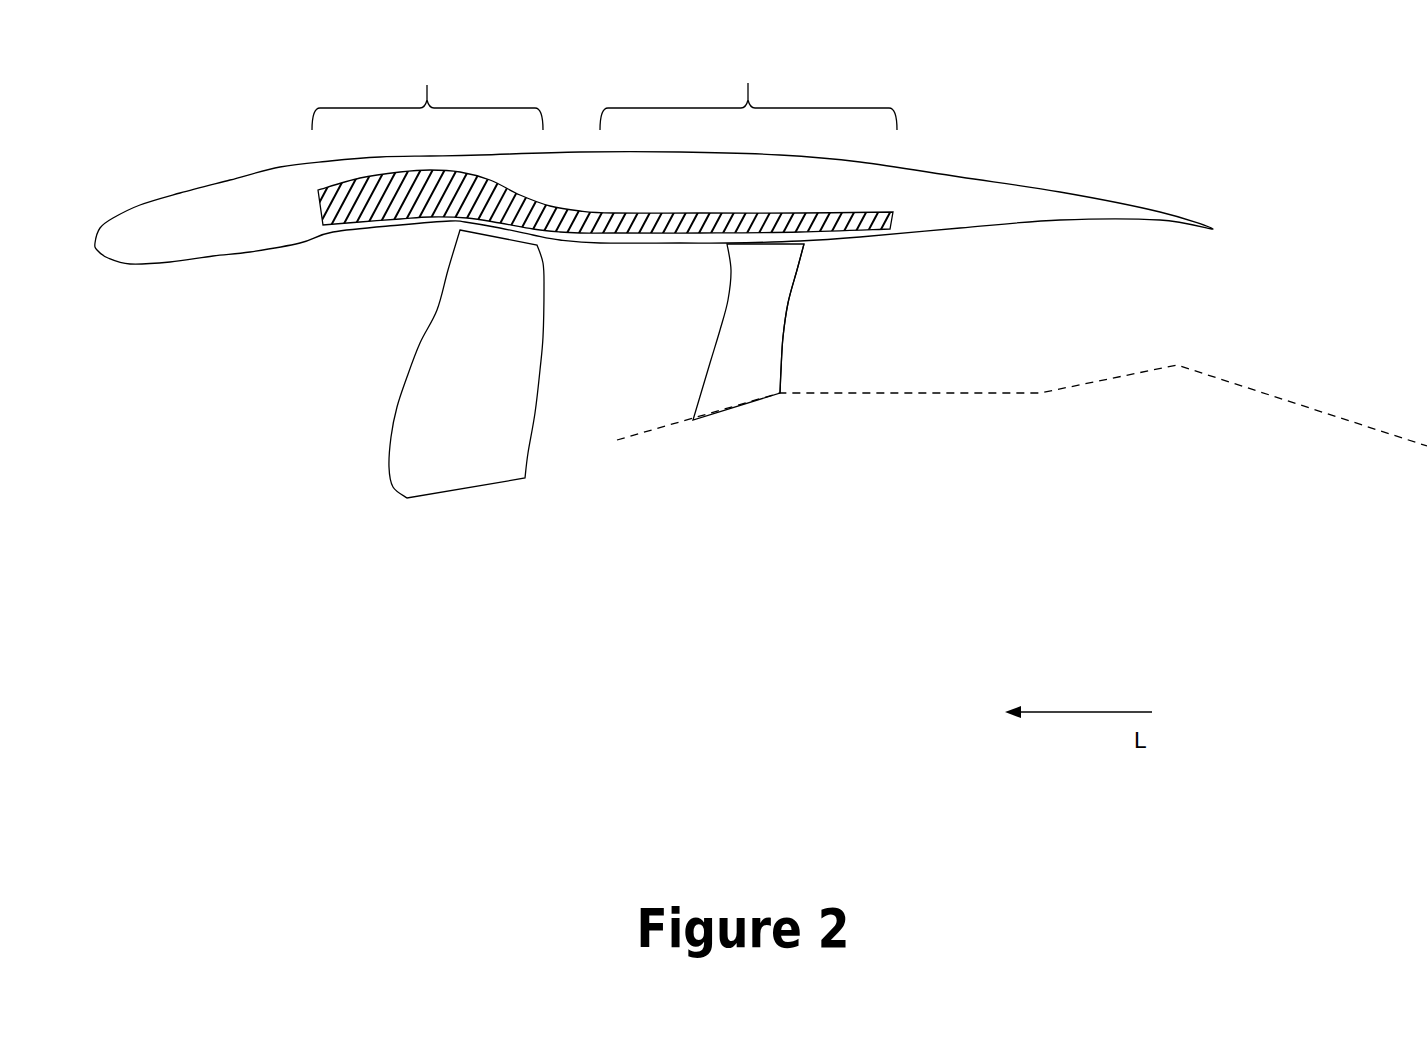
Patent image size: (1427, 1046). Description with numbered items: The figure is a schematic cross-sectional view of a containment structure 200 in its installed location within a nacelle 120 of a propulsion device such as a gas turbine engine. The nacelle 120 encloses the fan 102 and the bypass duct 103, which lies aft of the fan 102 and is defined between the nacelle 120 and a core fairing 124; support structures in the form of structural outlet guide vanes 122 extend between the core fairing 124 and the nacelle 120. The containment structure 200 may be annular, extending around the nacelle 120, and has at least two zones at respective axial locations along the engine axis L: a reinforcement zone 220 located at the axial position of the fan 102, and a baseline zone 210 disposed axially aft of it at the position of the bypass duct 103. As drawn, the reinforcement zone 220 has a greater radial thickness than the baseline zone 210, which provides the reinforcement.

The nacelle 120 is at (197, 228).
The containment structure 200 is at (332, 228).
The reinforcement zone 220 is at (427, 84).
The baseline zone 210 is at (748, 85).
The fan 102 is at (425, 390).
The bypass duct 103 is at (721, 332).
The structural outlet guide vane 122 is at (765, 320).
The core fairing 124 is at (968, 393).